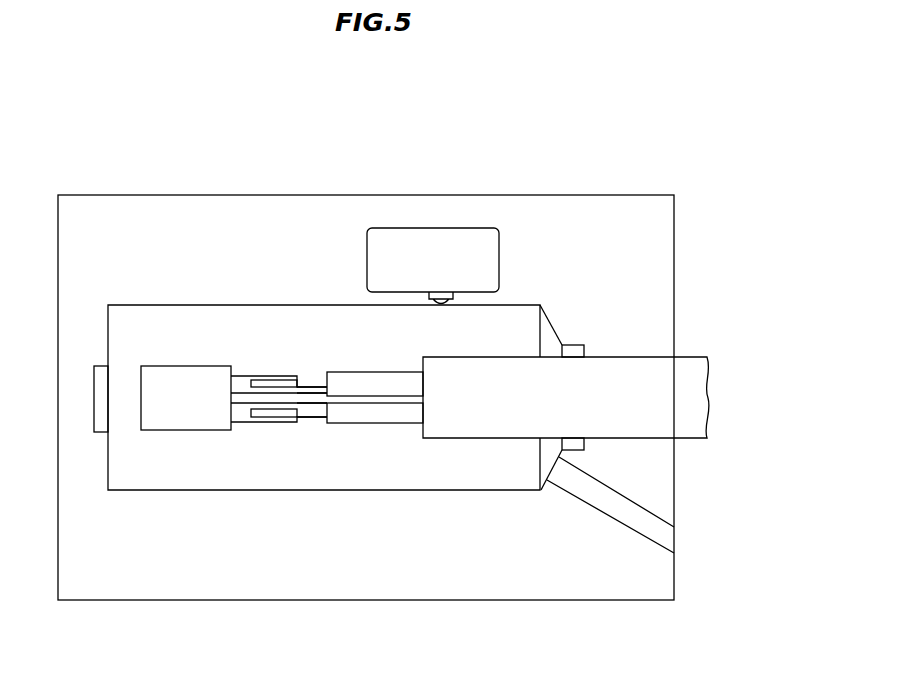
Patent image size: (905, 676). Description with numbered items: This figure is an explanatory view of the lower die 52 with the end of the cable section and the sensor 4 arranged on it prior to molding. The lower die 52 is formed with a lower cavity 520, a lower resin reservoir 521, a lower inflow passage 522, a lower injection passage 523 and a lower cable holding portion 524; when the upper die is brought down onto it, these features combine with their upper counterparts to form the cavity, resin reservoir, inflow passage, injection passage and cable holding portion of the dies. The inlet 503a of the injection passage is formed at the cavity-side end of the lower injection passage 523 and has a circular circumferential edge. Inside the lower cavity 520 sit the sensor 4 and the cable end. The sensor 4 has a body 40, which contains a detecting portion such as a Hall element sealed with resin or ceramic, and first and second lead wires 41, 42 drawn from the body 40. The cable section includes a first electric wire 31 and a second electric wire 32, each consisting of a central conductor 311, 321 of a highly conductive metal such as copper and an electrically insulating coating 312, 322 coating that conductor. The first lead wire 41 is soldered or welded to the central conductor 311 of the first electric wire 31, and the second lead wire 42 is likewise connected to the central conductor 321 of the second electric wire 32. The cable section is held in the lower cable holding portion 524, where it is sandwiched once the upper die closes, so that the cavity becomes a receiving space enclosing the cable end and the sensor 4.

The lower die 52 is at (65, 152).
The lower cavity 520 is at (208, 333).
The lower resin reservoir 521 is at (402, 250).
The lower inflow passage 522 is at (445, 288).
The lower injection passage 523 is at (677, 538).
The inlet of the injection passage 503a is at (552, 476).
The lower cable holding portion 524 is at (625, 357).
The sensor 4 is at (233, 392).
The body 40 is at (165, 423).
The first lead wire 41 is at (240, 383).
The second lead wire 42 is at (240, 413).
The first electric wire 31 is at (341, 312).
The central conductor 311 is at (310, 383).
The electrically insulating coating 312 is at (372, 379).
The second electric wire 32 is at (342, 485).
The central conductor 321 is at (315, 415).
The electrically insulating coating 322 is at (372, 417).